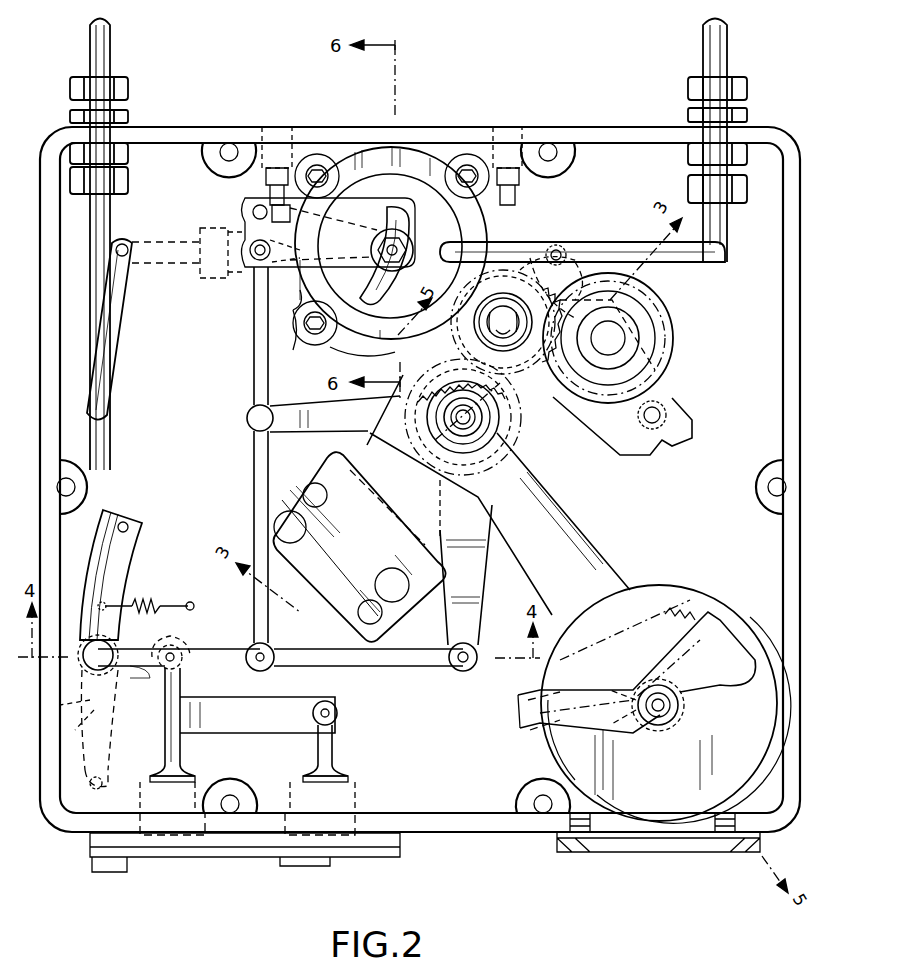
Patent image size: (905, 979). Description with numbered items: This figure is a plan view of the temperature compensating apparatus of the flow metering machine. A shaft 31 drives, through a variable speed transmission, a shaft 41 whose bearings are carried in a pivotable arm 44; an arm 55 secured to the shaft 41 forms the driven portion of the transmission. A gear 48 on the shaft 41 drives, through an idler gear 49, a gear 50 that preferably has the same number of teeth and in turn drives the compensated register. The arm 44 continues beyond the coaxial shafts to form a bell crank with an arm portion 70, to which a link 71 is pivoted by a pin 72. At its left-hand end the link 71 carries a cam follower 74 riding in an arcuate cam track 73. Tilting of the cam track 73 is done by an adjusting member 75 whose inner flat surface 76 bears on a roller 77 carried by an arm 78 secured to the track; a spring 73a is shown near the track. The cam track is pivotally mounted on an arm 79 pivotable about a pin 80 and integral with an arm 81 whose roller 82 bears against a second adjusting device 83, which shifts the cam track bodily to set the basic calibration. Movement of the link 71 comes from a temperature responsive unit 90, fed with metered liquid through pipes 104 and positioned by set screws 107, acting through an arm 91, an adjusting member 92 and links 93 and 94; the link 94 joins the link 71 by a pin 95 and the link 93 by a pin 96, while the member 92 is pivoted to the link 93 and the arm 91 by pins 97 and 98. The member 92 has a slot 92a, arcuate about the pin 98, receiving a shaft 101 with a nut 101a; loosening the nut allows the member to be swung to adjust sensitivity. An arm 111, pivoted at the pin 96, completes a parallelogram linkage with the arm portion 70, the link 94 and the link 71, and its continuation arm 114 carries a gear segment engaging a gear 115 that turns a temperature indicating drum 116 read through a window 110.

The shaft 31 is at (505, 452).
The shaft 41 is at (624, 350).
The arm 44 is at (543, 396).
The gear 48 is at (672, 327).
The idler gear 49 is at (527, 245).
The gear 50 is at (530, 468).
The arm 55 is at (600, 245).
The arm portion 70 is at (480, 614).
The link 71 is at (378, 668).
The pin 72 is at (466, 672).
The arcuate cam track 73 is at (136, 566).
The spring 73a is at (150, 598).
The cam follower 74 is at (106, 645).
The adjusting member 75 is at (185, 748).
The flat surface 76 is at (191, 650).
The roller 77 is at (171, 645).
The arm 78 is at (158, 670).
The arm 79 is at (66, 712).
The pin 80 is at (87, 783).
The arm 81 is at (232, 734).
The roller 82 is at (338, 713).
The adjusting device 83 is at (334, 746).
The temperature responsive unit 90 is at (413, 138).
The arm 91 is at (356, 186).
The adjusting member 92 is at (326, 279).
The slot 92a is at (354, 359).
The link 93 is at (254, 363).
The link 94 is at (254, 499).
The pin 95 is at (273, 645).
The pin 96 is at (247, 421).
The pin 97 is at (250, 268).
The pin 98 is at (250, 207).
The shaft 101 is at (408, 258).
The nut 101a is at (410, 213).
The pipes 104 is at (633, 250).
The set screws 107 is at (262, 135).
The window 110 is at (712, 835).
The arm 111 is at (305, 440).
The arm 114 is at (596, 535).
The gear 115 is at (682, 680).
The drum 116 is at (768, 640).